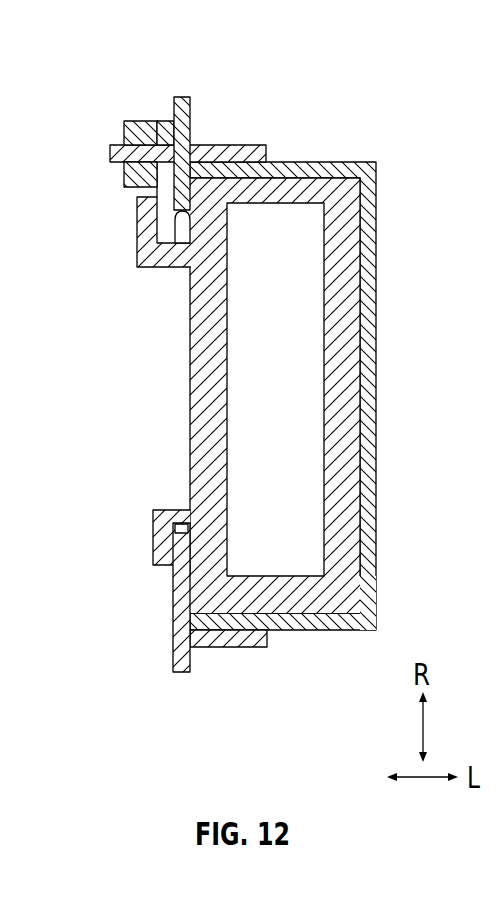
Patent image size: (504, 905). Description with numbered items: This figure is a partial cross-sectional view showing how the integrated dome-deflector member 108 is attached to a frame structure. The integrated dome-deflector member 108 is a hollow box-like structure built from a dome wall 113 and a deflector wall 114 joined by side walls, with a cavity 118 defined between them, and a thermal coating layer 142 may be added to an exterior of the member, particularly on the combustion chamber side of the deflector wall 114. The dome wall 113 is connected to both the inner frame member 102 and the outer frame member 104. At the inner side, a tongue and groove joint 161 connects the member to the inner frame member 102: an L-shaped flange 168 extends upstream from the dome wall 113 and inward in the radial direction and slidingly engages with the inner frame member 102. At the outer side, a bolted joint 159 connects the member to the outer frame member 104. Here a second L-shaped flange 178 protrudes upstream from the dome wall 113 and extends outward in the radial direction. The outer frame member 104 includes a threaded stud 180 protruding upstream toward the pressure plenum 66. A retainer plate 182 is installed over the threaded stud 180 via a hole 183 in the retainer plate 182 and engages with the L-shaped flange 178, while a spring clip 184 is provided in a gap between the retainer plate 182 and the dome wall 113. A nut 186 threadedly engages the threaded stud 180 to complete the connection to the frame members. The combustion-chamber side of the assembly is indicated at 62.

The housing assembly 62 is at (285, 420).
The pressure plenum 66 is at (173, 381).
The inner frame member 102 is at (220, 640).
The outer frame member 104 is at (250, 150).
The integrated dome-deflector member 108 is at (325, 598).
The dome wall 113 is at (192, 418).
The deflector wall 114 is at (353, 327).
The cavity 118 is at (306, 240).
The thermal coating layer 142 is at (368, 593).
The bolted joint 159 is at (173, 131).
The tongue and groove joint 161 is at (131, 566).
The L-shaped flange 168 is at (153, 545).
The L-shaped flange 178 is at (145, 268).
The threaded stud 180 is at (173, 137).
The retainer plate 182 is at (165, 135).
The hole 183 is at (186, 118).
The spring clip 184 is at (190, 215).
The nut 186 is at (135, 121).